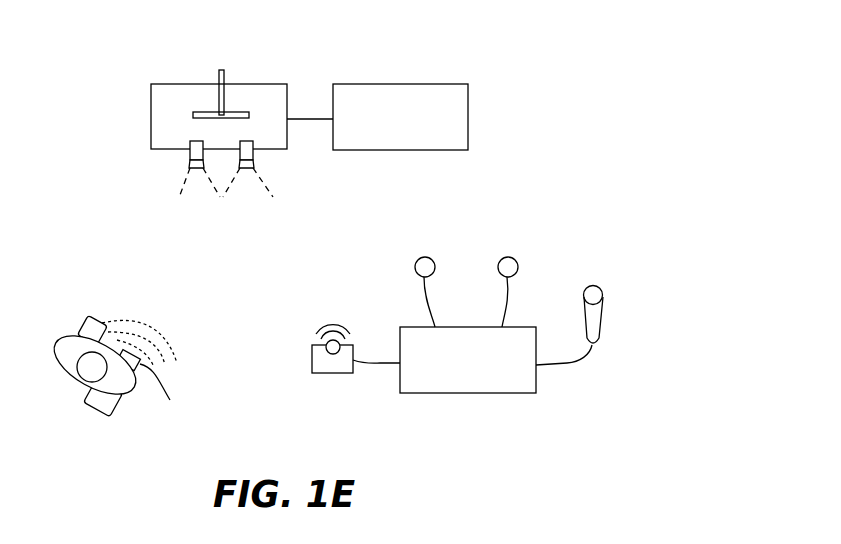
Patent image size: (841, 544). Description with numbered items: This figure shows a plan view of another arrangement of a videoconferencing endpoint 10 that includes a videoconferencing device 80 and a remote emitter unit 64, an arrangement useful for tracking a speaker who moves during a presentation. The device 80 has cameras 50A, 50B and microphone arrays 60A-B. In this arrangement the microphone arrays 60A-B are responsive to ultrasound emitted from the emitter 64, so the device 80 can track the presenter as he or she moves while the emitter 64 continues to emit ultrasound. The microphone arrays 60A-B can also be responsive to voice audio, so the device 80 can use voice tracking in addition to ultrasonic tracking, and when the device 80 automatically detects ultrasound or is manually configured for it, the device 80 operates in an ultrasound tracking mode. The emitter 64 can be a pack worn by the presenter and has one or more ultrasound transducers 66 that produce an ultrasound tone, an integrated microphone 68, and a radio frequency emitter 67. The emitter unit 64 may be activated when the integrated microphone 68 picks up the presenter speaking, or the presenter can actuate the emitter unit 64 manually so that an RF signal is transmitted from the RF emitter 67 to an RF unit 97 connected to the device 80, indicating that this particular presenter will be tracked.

The endpoint 10 is at (509, 54).
The videoconferencing device 80 is at (192, 84).
The microphone arrays 60A-B is at (224, 73).
The camera 50A is at (190, 155).
The camera 50B is at (253, 155).
The RF unit 97 is at (402, 84).
The emitter unit 64 is at (418, 395).
The ultrasound transducers 66 is at (498, 266).
The RF emitter 67 is at (318, 375).
The integrated microphone 68 is at (605, 317).